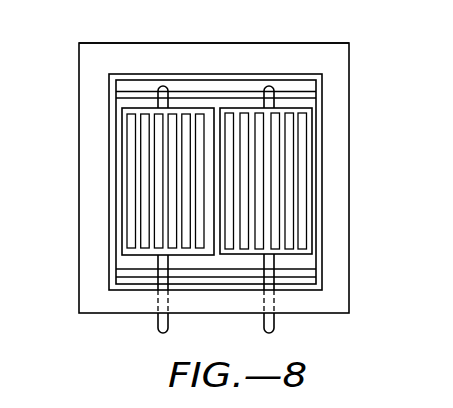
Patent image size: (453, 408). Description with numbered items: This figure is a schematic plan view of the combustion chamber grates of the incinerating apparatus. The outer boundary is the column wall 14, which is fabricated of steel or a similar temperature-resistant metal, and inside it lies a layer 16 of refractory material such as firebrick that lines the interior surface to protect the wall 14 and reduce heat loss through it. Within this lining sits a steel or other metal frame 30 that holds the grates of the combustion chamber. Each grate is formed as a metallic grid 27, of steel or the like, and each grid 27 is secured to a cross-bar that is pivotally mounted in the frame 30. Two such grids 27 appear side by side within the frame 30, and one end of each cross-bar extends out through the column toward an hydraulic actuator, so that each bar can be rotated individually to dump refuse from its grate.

The wall 14 is at (79, 95).
The layer of refractory material 16 is at (102, 58).
The metallic grid 27 is at (148, 224).
The frame 30 is at (322, 116).